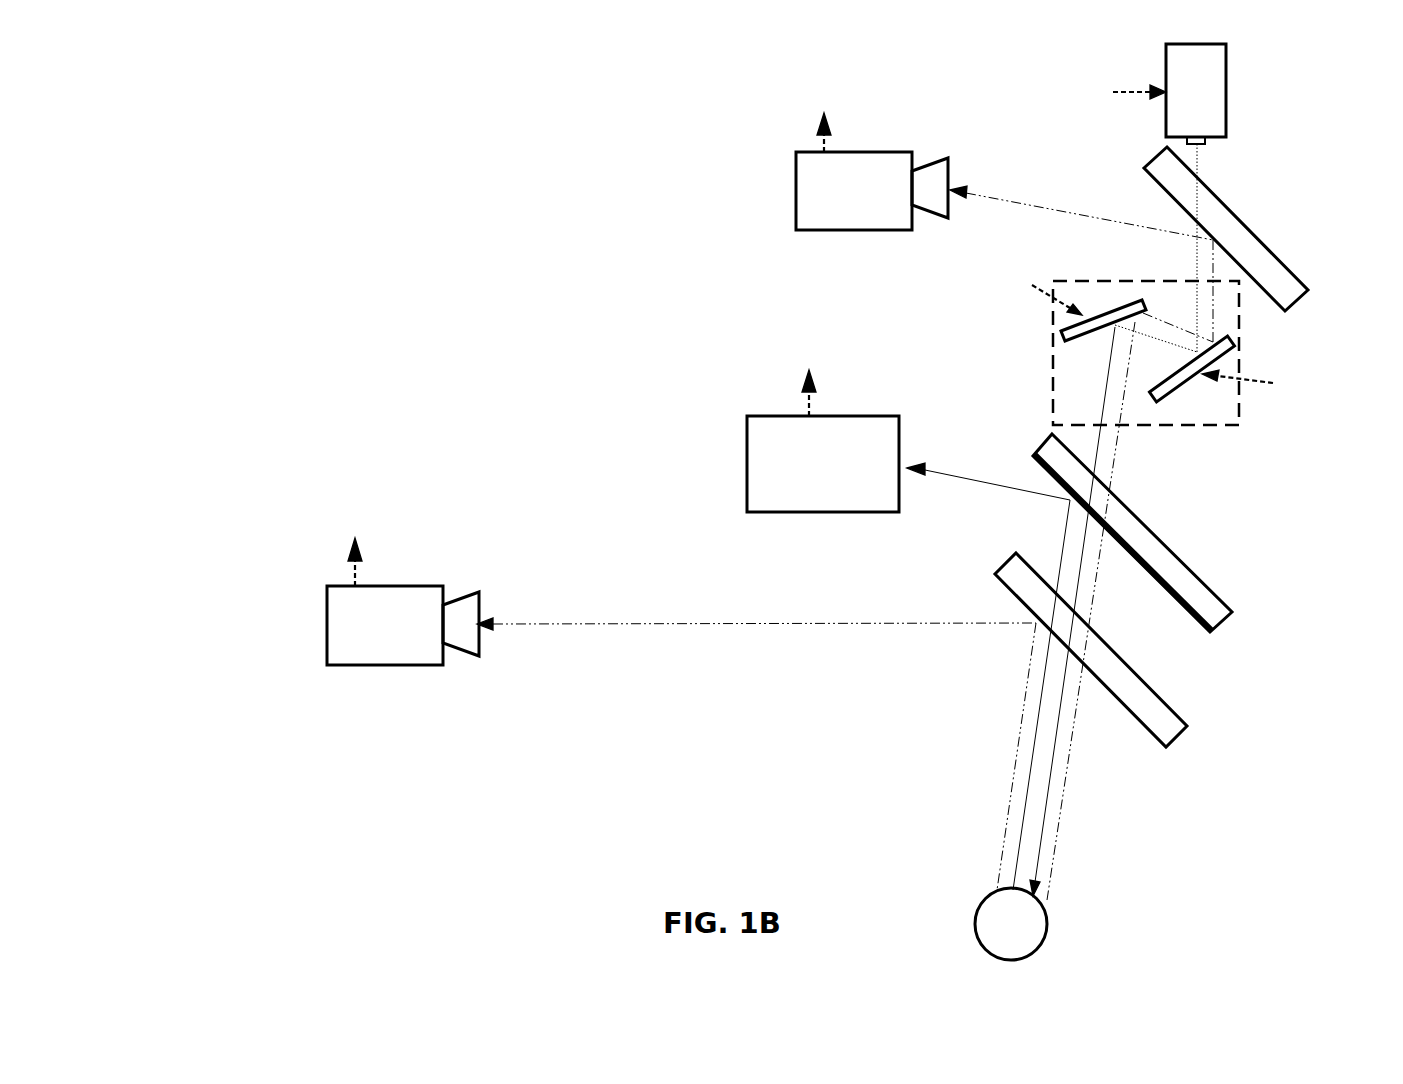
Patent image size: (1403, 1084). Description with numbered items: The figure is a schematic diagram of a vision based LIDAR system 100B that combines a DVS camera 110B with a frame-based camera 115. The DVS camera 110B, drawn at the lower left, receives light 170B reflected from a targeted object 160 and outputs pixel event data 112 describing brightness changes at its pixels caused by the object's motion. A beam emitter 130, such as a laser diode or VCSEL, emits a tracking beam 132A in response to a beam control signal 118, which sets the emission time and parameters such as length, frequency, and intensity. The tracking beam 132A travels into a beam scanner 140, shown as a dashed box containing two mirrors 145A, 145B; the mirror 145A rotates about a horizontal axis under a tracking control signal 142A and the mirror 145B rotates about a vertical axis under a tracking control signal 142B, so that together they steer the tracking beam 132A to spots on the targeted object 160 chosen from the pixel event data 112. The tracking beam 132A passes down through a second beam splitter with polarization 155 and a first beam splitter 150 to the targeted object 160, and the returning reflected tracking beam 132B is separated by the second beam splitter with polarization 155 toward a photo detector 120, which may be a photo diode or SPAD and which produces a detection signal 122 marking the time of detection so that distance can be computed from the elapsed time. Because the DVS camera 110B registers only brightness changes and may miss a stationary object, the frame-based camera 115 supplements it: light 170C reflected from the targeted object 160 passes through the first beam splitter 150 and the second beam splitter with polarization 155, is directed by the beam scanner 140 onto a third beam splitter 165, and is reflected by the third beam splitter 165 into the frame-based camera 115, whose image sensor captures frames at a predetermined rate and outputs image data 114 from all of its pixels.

The vision based LIDAR system 100B is at (149, 97).
The DVS camera 110B is at (428, 666).
The pixel event data 112 is at (352, 572).
The image data 114 is at (820, 121).
The frame-based camera 115 is at (796, 190).
The beam control signal 118 is at (1142, 88).
The photo detector 120 is at (808, 508).
The detection signal 122 is at (805, 375).
The beam emitter 130 is at (1227, 112).
The tracking beam 132A is at (1053, 740).
The reflected tracking beam 132B is at (1042, 692).
The beam scanner 140 is at (1052, 406).
The tracking control signal 142A is at (1038, 290).
The tracking control signal 142B is at (1262, 381).
The mirror 145A is at (1117, 300).
The mirror 145B is at (1183, 386).
The first beam splitter 150 is at (1160, 698).
The second beam splitter with polarization 155 is at (1190, 568).
The targeted object 160 is at (1038, 950).
The third beam splitter 165 is at (1233, 212).
The light 170B is at (613, 625).
The light 170C is at (1053, 208).